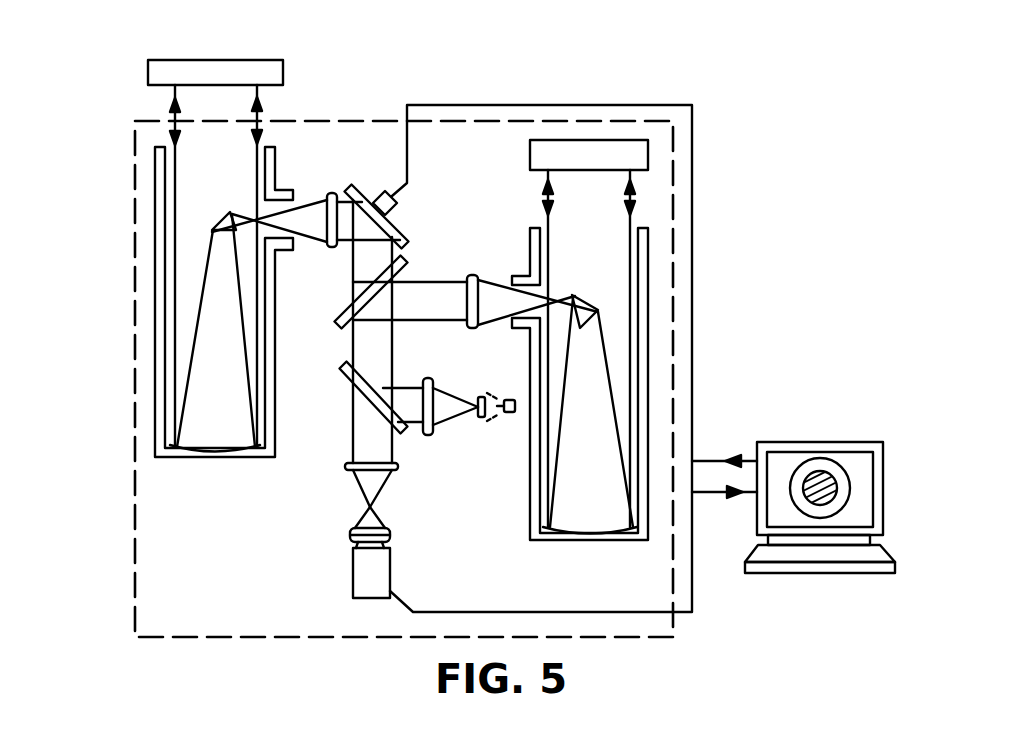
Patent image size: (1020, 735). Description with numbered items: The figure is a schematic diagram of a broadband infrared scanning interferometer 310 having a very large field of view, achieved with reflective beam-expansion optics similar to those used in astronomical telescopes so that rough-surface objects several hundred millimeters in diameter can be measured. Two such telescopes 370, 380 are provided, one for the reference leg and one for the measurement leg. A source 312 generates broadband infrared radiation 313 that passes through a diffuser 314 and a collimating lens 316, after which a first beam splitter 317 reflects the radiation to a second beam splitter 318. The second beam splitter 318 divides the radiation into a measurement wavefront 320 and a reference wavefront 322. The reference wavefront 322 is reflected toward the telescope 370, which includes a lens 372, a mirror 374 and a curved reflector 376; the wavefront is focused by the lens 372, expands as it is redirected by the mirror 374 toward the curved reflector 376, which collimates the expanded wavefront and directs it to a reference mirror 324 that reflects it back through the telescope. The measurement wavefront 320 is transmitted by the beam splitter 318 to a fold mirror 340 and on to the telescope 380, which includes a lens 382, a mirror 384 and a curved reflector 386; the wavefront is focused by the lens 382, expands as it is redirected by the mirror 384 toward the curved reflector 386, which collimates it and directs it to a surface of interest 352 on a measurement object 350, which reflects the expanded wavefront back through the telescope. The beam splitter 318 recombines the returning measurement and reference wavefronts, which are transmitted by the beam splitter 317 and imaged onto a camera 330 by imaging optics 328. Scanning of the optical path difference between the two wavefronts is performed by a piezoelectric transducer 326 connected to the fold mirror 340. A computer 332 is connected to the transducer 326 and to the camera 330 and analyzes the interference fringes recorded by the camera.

The interferometer 310 is at (133, 503).
The source 312 is at (507, 398).
The broadband infrared radiation 313 is at (449, 418).
The diffuser 314 is at (483, 420).
The collimating lens 316 is at (433, 378).
The first beam splitter 317 is at (343, 366).
The second beam splitter 318 is at (338, 310).
The measurement wavefront 320 is at (367, 268).
The reference wavefront 322 is at (423, 298).
The reference mirror 324 is at (650, 152).
The piezoelectric transducer 326 is at (383, 190).
The imaging optics 328 is at (343, 457).
The camera 330 is at (352, 581).
The computer 332 is at (848, 442).
The fold mirror 340 is at (398, 230).
The measurement object 350 is at (185, 60).
The surface of interest 352 is at (173, 102).
The telescope 370 is at (650, 298).
The lens 372 is at (473, 277).
The mirror 374 is at (588, 297).
The curved reflector 376 is at (590, 535).
The telescope 380 is at (153, 307).
The lens 382 is at (330, 193).
The mirror 384 is at (219, 226).
The curved reflector 386 is at (193, 455).